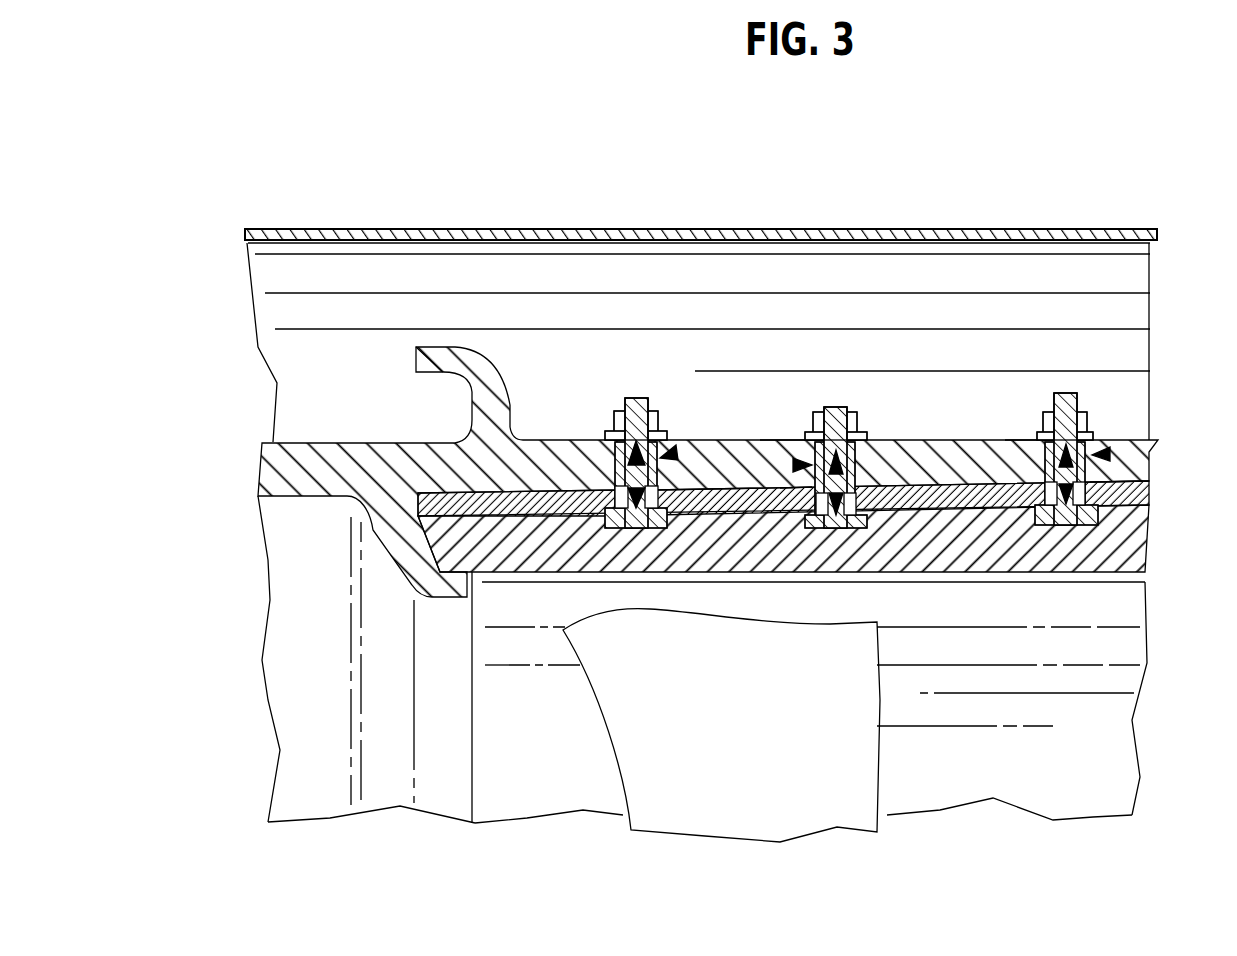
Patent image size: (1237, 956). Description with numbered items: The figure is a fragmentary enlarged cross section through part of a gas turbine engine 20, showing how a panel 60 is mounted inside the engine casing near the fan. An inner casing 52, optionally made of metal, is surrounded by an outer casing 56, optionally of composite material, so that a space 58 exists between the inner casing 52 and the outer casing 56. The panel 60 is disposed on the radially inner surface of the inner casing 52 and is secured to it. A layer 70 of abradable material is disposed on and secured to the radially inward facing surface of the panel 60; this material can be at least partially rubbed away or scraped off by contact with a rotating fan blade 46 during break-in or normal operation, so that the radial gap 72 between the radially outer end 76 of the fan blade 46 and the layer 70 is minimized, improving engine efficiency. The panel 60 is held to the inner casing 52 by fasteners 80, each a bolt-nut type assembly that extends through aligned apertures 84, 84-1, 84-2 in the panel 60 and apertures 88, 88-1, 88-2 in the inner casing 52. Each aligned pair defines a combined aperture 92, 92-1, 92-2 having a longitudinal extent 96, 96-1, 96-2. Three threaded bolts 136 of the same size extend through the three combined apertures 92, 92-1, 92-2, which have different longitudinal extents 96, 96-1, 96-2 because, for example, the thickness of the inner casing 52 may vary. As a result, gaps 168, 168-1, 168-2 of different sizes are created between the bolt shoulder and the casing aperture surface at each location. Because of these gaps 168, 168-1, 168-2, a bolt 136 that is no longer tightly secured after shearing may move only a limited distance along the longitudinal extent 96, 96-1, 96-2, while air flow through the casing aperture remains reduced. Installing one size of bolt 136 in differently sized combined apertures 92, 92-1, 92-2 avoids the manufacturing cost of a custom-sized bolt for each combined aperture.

The gas turbine engine 20 is at (162, 177).
The fan blade 46 is at (757, 696).
The inner casing 52 is at (532, 455).
The outer casing 56 is at (377, 228).
The space 58 is at (785, 363).
The panel 60 is at (553, 490).
The layer of abradable material 70 is at (1133, 532).
The radial gap 72 is at (826, 620).
The radially outer end 76 is at (858, 622).
The fastener 80 is at (668, 378).
The aperture 84 is at (763, 455).
The aperture 84-1 is at (797, 440).
The aperture 84-2 is at (1045, 440).
The aperture 88 is at (617, 450).
The aperture 88-1 is at (865, 465).
The aperture 88-2 is at (1105, 458).
The combined aperture 92 is at (722, 492).
The combined aperture 92-1 is at (810, 490).
The combined aperture 92-2 is at (1103, 460).
The longitudinal extent 96 is at (600, 455).
The longitudinal extent 96-1 is at (858, 478).
The longitudinal extent 96-2 is at (1088, 468).
The threaded bolt 136 is at (645, 398).
The gap 168 is at (630, 425).
The gap 168-1 is at (990, 440).
The gap 168-2 is at (1123, 440).